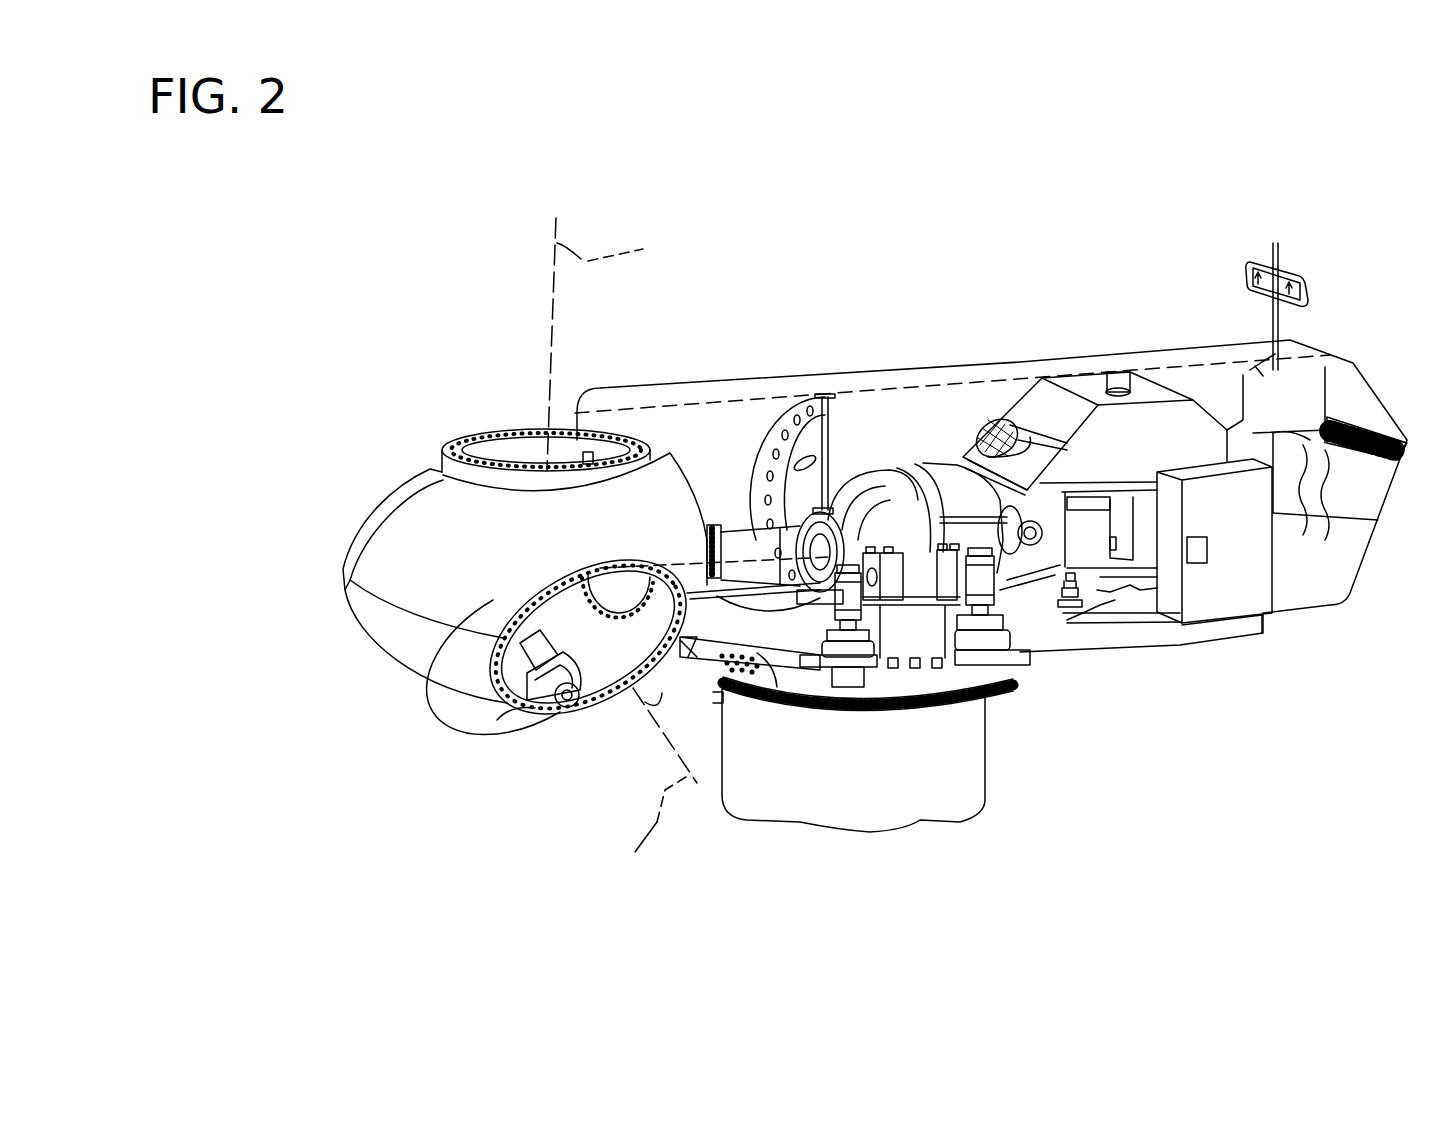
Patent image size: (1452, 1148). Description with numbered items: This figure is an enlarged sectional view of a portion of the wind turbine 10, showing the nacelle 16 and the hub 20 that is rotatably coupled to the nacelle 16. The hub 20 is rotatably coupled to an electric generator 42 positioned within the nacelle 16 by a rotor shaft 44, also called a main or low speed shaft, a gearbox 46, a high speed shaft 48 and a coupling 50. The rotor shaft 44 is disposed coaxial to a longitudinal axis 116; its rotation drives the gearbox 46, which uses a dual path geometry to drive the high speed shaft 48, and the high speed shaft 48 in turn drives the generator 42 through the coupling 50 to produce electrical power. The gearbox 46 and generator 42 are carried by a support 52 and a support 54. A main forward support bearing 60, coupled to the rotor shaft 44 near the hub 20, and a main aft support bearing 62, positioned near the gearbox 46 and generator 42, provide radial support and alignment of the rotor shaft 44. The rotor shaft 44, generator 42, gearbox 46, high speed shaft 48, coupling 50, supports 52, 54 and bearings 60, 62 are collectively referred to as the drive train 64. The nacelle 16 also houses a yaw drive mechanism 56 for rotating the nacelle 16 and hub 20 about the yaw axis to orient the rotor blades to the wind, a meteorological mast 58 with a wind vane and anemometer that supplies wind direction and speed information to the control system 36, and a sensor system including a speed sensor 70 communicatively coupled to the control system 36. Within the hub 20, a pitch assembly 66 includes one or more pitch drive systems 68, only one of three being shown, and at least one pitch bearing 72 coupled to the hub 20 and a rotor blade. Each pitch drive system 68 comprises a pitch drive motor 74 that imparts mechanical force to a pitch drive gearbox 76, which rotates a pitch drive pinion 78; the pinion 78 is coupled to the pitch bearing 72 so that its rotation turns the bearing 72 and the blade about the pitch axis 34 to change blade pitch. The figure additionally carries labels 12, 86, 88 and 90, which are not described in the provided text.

The wind turbine 10 is at (360, 290).
The tower 12 is at (910, 822).
The nacelle 16 is at (968, 302).
The hub 20 is at (322, 563).
The pitch axis 34 is at (622, 548).
The control system 36 is at (1207, 497).
The electric generator 42 is at (1090, 553).
The rotor shaft 44 is at (737, 550).
The gearbox 46 is at (922, 482).
The high speed shaft 48 is at (1007, 555).
The coupling 50 is at (1042, 493).
The support 52 is at (958, 672).
The support 54 is at (1018, 573).
The yaw drive mechanism 56 is at (845, 670).
The meteorological mast 58 is at (1310, 290).
The main forward support bearing 60 is at (712, 583).
The main aft support bearing 62 is at (910, 497).
The drive train 64 is at (788, 468).
The pitch assembly 66 is at (540, 558).
The pitch drive system 68 is at (506, 662).
The speed sensor 70 is at (752, 540).
The pitch bearing 72 is at (517, 705).
The pitch drive motor 74 is at (517, 615).
The pitch drive gearbox 76 is at (573, 626).
The pitch drive pinion 78 is at (552, 707).
The pitch drive gearbox 86 is at (592, 677).
The blade root opening 88 is at (633, 573).
The hub wall 90 is at (500, 648).
The longitudinal axis 116 is at (785, 545).